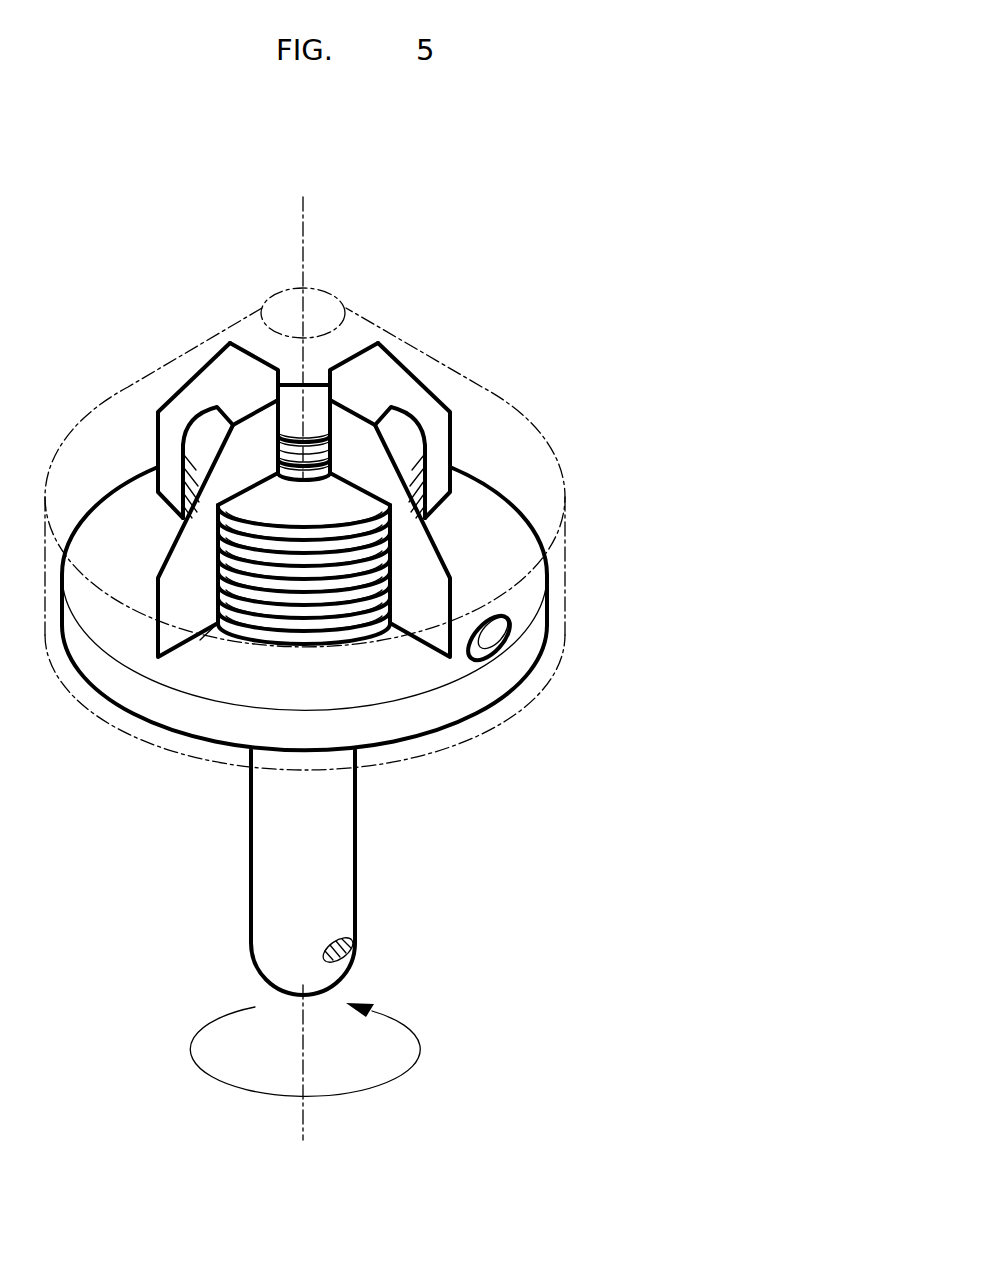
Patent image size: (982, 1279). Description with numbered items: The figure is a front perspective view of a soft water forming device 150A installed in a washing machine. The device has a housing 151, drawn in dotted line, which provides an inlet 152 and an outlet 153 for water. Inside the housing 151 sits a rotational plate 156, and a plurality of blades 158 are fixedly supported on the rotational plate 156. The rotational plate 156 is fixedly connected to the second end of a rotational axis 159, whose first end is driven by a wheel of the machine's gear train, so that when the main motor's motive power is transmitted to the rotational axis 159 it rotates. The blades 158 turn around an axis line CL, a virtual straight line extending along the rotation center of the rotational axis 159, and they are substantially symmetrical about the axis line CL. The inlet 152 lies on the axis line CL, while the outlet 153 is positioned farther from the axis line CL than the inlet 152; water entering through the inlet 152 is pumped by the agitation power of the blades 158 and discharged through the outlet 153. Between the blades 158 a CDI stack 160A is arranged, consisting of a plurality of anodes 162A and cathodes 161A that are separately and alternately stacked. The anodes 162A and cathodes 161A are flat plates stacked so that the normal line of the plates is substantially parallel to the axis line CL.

The soft water forming device 150A is at (700, 395).
The housing 151 is at (457, 377).
The inlet 152 is at (268, 322).
The outlet 153 is at (512, 636).
The rotational plate 156 is at (481, 691).
The blades 158 is at (210, 467).
The rotational axis 159 is at (342, 868).
The CDI stack 160A is at (222, 647).
The cathodes 161A is at (405, 517).
The anodes 162A is at (418, 512).
The axis line CL is at (305, 243).